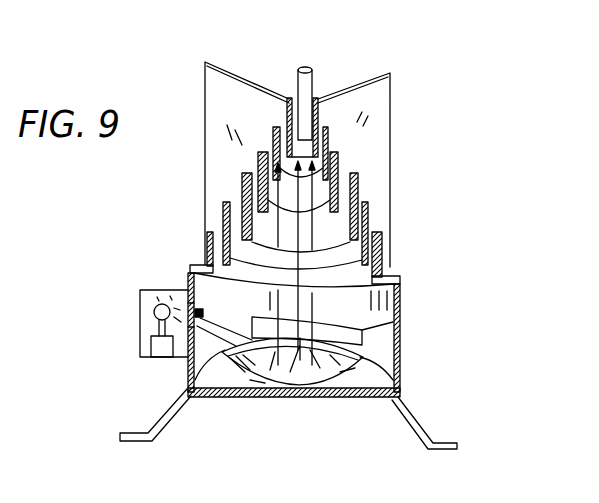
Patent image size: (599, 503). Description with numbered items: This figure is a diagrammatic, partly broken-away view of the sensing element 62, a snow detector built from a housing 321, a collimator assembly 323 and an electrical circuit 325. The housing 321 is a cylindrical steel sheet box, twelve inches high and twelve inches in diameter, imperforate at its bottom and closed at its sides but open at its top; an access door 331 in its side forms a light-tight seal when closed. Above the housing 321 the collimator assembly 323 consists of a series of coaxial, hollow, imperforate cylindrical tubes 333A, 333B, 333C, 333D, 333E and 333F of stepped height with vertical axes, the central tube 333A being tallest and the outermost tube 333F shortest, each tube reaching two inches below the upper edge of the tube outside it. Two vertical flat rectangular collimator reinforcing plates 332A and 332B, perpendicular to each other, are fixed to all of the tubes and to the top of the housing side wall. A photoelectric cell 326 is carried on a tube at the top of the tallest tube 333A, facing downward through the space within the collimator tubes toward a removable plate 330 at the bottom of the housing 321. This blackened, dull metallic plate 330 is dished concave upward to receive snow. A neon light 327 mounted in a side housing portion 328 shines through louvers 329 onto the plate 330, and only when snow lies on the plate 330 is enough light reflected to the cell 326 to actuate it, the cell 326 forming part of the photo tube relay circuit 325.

The sensing element 62 is at (270, 52).
The housing 321 is at (402, 393).
The collimator assembly 323 is at (357, 187).
The electrical circuit 325 is at (151, 345).
The photoelectric cell 326 is at (298, 82).
The neon light 327 is at (153, 312).
The side housing portion 328 is at (140, 291).
The louvers 329 is at (204, 298).
The removable plate 330 is at (363, 358).
The access door 331 is at (395, 318).
The collimator reinforcing plate 332A is at (204, 64).
The collimator reinforcing plate 332B is at (388, 92).
The central tube 333A is at (322, 118).
The collimator tube 333B is at (330, 140).
The collimator tube 333C is at (338, 168).
The collimator tube 333D is at (358, 192).
The collimator tube 333E is at (368, 224).
The collimator tube 333F is at (324, 258).